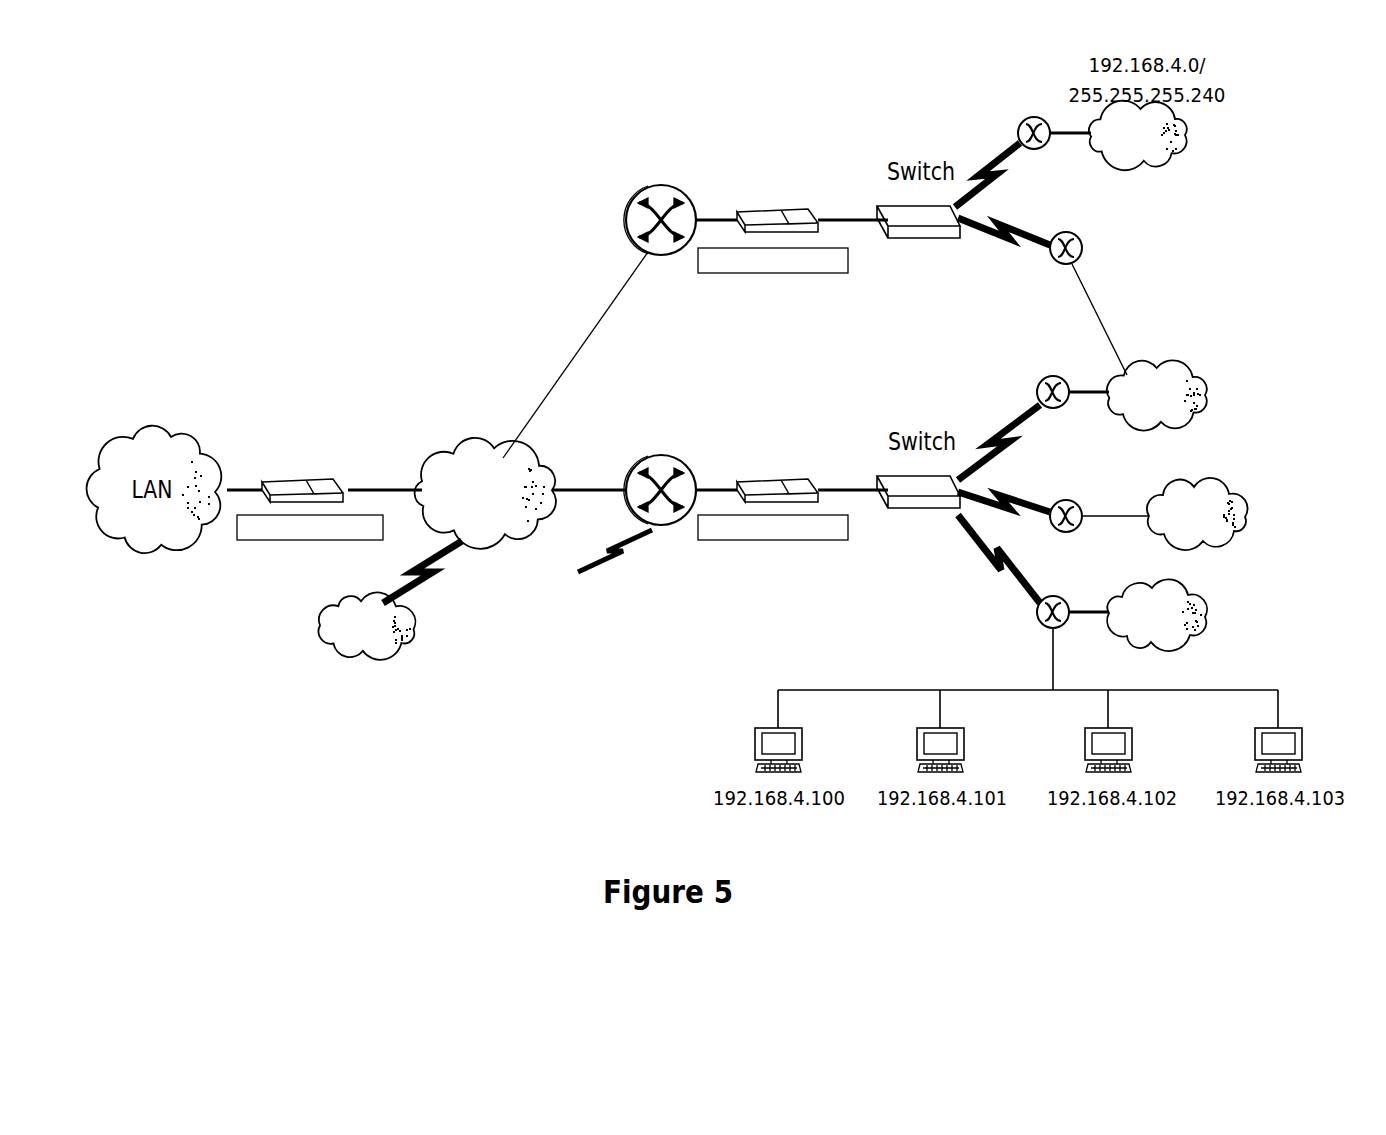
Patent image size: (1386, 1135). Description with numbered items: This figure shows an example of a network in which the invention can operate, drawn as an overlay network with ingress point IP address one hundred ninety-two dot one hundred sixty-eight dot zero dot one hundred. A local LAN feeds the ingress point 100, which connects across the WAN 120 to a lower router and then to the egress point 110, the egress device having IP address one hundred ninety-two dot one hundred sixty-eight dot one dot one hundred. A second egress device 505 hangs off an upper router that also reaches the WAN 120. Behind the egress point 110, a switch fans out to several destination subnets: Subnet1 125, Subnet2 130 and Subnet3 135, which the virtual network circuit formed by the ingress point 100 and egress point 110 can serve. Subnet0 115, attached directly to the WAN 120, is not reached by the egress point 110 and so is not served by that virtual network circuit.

The ingress point 100 is at (315, 464).
The egress point 110 is at (800, 477).
The Subnet0 115 is at (415, 626).
The WAN 120 is at (532, 471).
The Subnet1 125 is at (1207, 394).
The Subnet2 130 is at (1247, 513).
The Subnet3 135 is at (1207, 617).
The egress device 505 is at (800, 207).